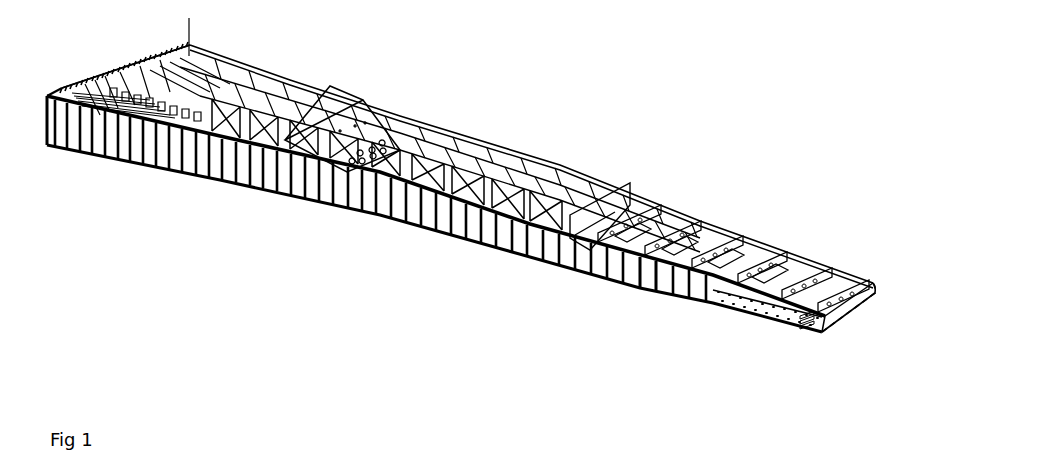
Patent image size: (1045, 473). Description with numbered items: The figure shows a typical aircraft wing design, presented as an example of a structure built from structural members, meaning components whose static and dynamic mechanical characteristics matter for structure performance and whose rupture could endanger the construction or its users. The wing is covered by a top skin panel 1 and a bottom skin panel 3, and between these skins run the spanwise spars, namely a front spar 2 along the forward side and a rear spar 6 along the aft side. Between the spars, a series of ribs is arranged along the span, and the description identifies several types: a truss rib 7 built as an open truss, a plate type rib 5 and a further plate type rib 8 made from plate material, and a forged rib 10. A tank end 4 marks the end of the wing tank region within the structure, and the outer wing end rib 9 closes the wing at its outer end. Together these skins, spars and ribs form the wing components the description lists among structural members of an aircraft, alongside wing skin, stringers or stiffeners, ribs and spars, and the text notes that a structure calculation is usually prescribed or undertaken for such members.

The top skin panel 1 is at (125, 103).
The front spar 2 is at (477, 232).
The bottom skin panel 3 is at (645, 288).
The tank end 4 is at (850, 288).
The plate type rib 5 is at (806, 275).
The rear spar 6 is at (605, 190).
The truss rib 7 is at (538, 168).
The plate type rib 8 is at (371, 113).
The outer wing end rib 9 is at (102, 78).
The forged rib 10 is at (203, 85).